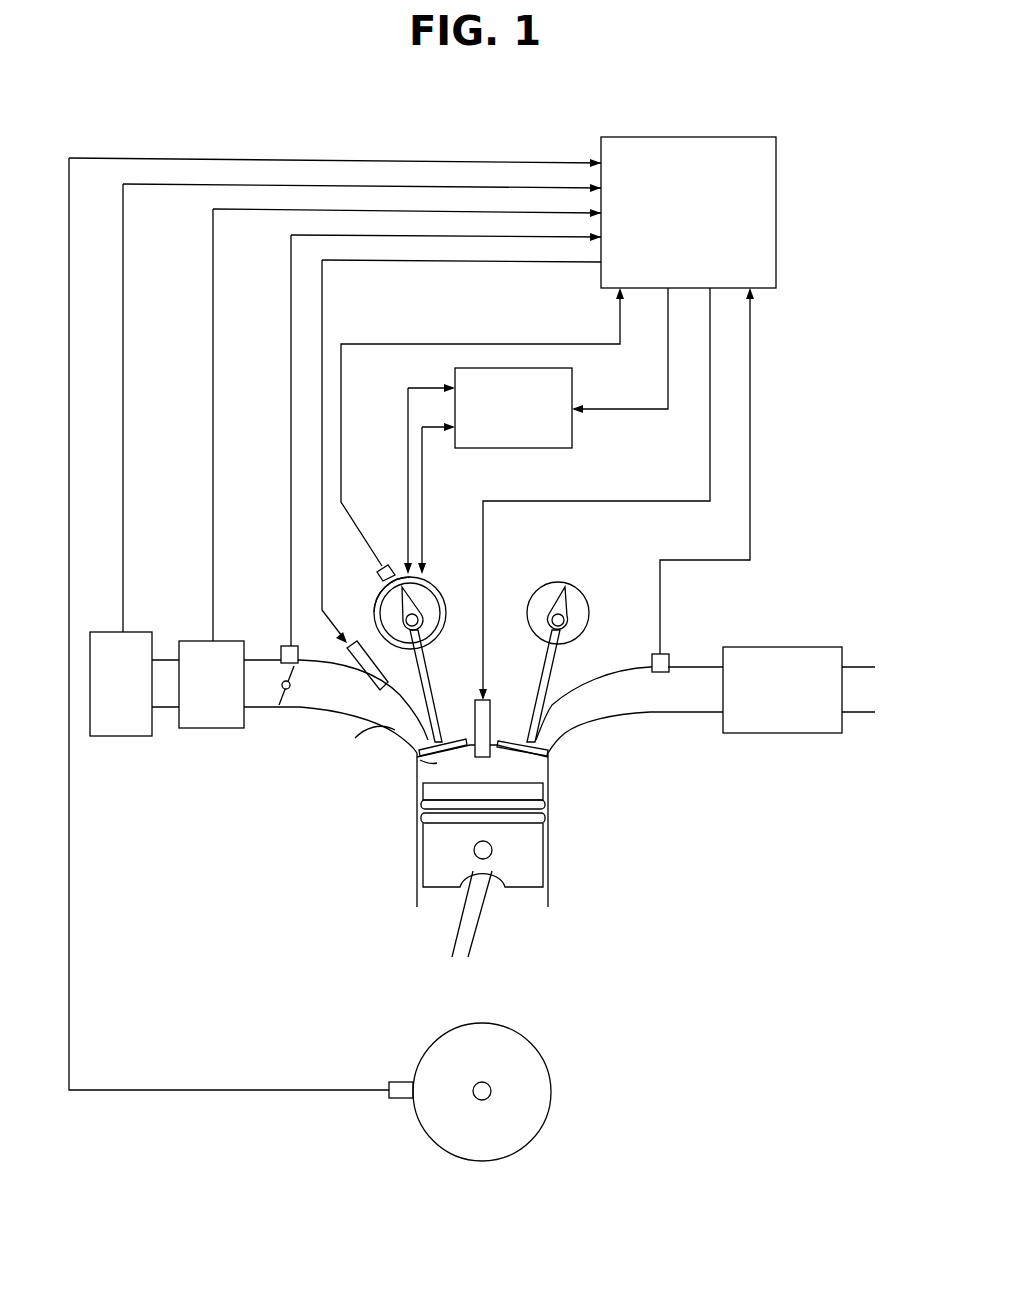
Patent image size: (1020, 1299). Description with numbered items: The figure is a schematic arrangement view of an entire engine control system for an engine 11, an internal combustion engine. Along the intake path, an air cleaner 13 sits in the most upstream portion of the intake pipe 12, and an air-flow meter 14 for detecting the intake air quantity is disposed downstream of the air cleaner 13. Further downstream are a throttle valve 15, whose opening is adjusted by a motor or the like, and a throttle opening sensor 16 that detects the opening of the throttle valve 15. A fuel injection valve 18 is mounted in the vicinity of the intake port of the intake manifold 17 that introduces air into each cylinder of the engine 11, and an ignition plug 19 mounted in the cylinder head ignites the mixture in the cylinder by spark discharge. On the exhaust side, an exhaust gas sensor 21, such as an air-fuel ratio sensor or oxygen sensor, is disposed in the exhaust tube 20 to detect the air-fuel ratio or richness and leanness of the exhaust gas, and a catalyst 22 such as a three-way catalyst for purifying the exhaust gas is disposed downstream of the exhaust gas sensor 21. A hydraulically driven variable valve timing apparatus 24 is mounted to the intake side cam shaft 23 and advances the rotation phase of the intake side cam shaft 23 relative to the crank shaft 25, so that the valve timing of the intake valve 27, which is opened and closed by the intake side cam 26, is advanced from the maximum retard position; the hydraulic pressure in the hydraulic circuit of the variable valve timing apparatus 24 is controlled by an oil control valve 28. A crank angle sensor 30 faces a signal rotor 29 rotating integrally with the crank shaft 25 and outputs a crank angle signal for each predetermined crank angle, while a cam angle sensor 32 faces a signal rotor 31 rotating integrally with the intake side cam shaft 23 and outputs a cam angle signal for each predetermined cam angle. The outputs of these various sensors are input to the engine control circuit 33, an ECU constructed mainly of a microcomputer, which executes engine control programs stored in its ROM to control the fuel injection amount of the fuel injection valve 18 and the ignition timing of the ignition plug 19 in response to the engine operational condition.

The engine 11 is at (548, 842).
The intake pipe 12 is at (258, 660).
The air cleaner 13 is at (122, 736).
The air-flow meter 14 is at (210, 728).
The throttle valve 15 is at (284, 700).
The throttle opening sensor 16 is at (285, 646).
The intake manifold 17 is at (355, 738).
The fuel injection valve 18 is at (372, 652).
The ignition plug 19 is at (496, 702).
The exhaust tube 20 is at (628, 667).
The exhaust gas sensor 21 is at (670, 656).
The catalyst 22 is at (775, 733).
The intake side cam shaft 23 is at (426, 630).
The variable valve timing apparatus 24 is at (439, 582).
The crank shaft 25 is at (487, 1084).
The intake side cam 26 is at (456, 592).
The intake valve 27 is at (437, 763).
The oil control valve 28 is at (572, 385).
The signal rotor 29 is at (552, 1095).
The crank angle sensor 30 is at (398, 1082).
The signal rotor 31 is at (375, 598).
The cam angle sensor 32 is at (388, 562).
The engine control circuit 33 is at (776, 212).